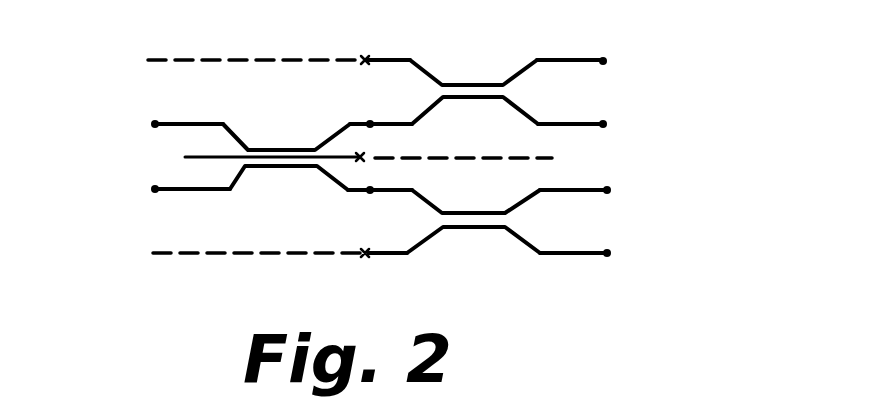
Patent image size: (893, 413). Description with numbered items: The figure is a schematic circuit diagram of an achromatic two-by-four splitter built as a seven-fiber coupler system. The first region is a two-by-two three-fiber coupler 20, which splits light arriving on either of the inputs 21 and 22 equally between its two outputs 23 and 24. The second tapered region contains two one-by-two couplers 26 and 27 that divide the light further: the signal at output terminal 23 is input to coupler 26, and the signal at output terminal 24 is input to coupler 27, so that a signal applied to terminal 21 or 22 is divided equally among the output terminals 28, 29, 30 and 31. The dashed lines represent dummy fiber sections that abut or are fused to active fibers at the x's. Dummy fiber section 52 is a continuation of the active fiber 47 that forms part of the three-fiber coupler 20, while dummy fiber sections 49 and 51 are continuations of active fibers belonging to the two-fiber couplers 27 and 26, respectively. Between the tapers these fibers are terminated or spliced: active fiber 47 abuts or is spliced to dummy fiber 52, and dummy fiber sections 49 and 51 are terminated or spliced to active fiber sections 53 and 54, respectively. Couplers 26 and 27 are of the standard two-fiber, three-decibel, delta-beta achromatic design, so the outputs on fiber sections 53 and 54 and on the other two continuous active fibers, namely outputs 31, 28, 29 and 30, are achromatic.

The three-fiber coupler 20 is at (277, 148).
The input 21 is at (155, 124).
The input 22 is at (155, 189).
The output terminal 23 is at (370, 124).
The output terminal 24 is at (370, 190).
The 1×2 coupler 26 is at (472, 84).
The 1×2 coupler 27 is at (474, 213).
The output terminal 28 is at (603, 61).
The output terminal 29 is at (603, 124).
The output terminal 30 is at (607, 190).
The output terminal 31 is at (607, 253).
The active fiber 47 is at (190, 157).
The dummy fiber section 49 is at (210, 256).
The dummy fiber section 51 is at (233, 59).
The dummy fiber section 52 is at (470, 158).
The active fiber section 53 is at (572, 253).
The active fiber section 54 is at (560, 60).